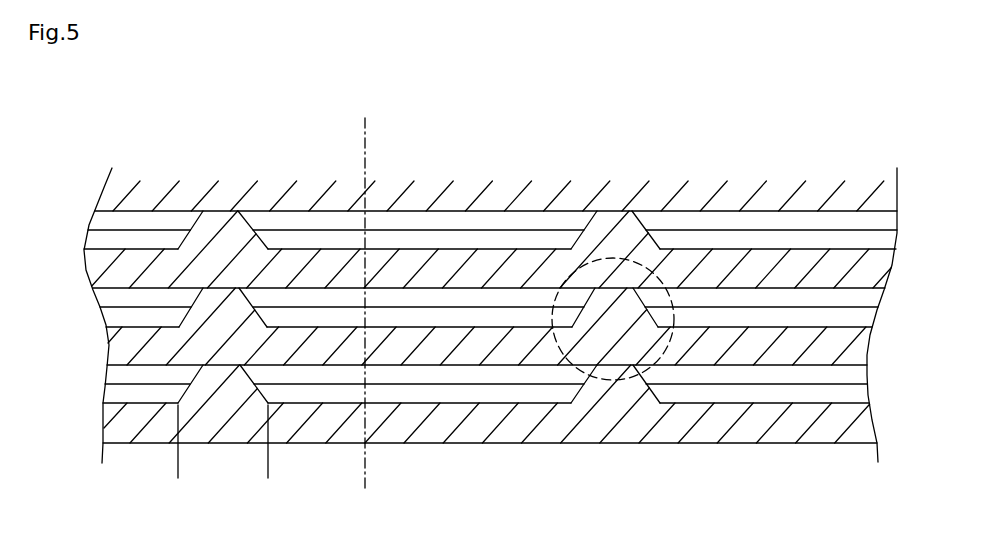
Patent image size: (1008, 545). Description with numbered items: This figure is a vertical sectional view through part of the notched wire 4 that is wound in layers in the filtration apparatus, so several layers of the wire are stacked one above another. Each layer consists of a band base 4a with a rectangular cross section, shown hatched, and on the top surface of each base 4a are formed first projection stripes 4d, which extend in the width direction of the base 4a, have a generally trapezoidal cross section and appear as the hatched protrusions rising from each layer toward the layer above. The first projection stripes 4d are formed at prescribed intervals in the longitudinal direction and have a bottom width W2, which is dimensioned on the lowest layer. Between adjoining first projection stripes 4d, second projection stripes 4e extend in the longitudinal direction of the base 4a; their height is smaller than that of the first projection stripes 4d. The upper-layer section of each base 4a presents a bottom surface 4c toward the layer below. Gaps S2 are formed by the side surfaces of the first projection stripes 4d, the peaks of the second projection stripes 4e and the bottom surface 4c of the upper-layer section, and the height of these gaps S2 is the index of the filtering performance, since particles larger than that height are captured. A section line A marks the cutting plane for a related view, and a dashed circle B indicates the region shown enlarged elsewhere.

The notched wire 4 is at (734, 170).
The band base 4a is at (837, 344).
The bottom surface 4c is at (426, 292).
The first projection stripes 4d is at (212, 222).
The second projection stripes 4e is at (450, 392).
The enlarged region B is at (572, 370).
The gaps S2 is at (500, 375).
The bottom width W2 is at (268, 470).
The section line A- A is at (362, 124).